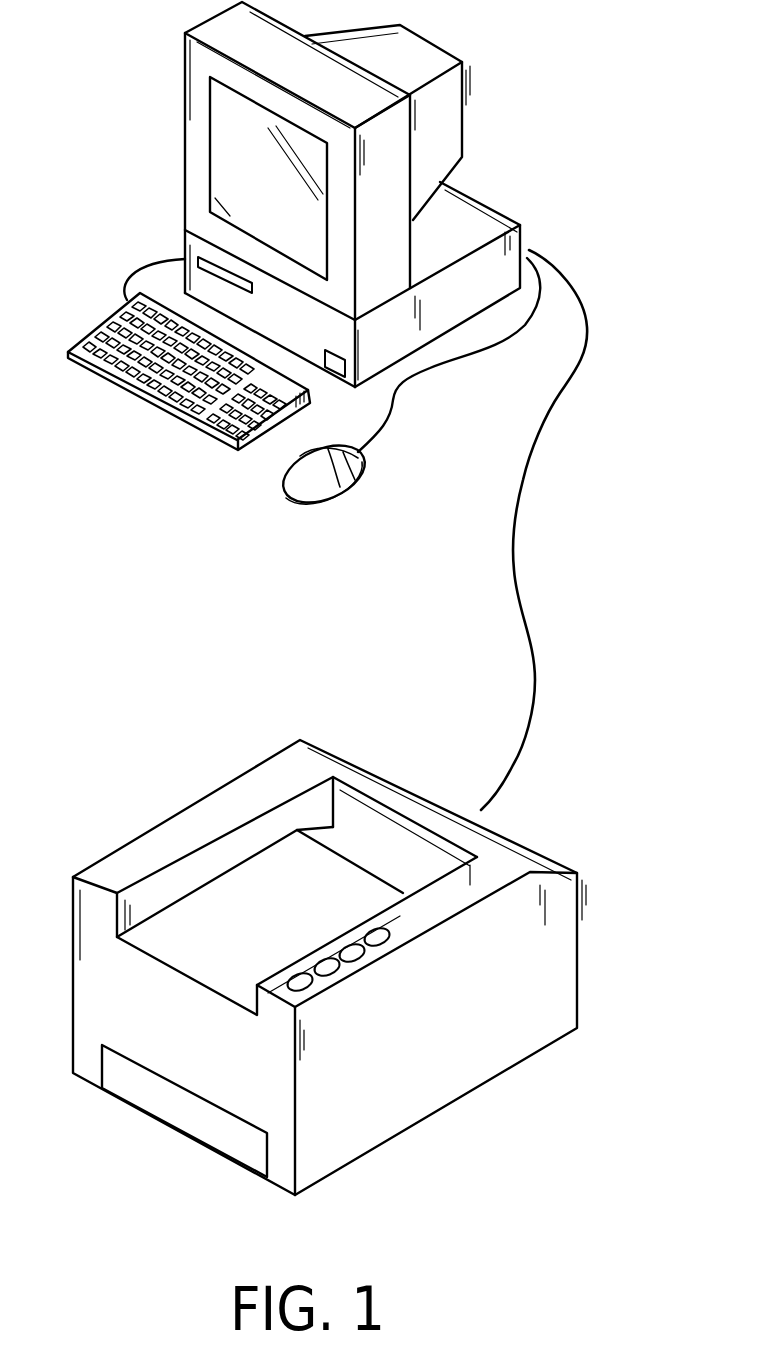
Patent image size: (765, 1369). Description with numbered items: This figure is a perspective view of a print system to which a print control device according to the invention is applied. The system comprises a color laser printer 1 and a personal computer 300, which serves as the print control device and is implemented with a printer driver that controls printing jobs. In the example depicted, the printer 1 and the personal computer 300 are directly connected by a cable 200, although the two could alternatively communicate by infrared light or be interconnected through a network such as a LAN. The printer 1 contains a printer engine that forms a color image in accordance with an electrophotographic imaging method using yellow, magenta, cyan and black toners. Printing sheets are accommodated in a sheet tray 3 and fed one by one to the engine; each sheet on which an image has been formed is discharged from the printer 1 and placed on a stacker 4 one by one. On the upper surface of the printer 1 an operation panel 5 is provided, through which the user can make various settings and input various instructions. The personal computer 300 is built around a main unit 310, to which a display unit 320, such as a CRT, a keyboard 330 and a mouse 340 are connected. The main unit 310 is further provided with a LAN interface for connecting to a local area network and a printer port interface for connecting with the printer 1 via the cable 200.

The printer 1 is at (366, 956).
The sheet tray 3 is at (150, 1095).
The stacker 4 is at (353, 848).
The operation panel 5 is at (316, 942).
The cable 200 is at (515, 523).
The personal computer 300 is at (333, 274).
The main unit 310 is at (530, 237).
The display unit 320 is at (197, 105).
The keyboard 330 is at (140, 398).
The mouse 340 is at (325, 487).